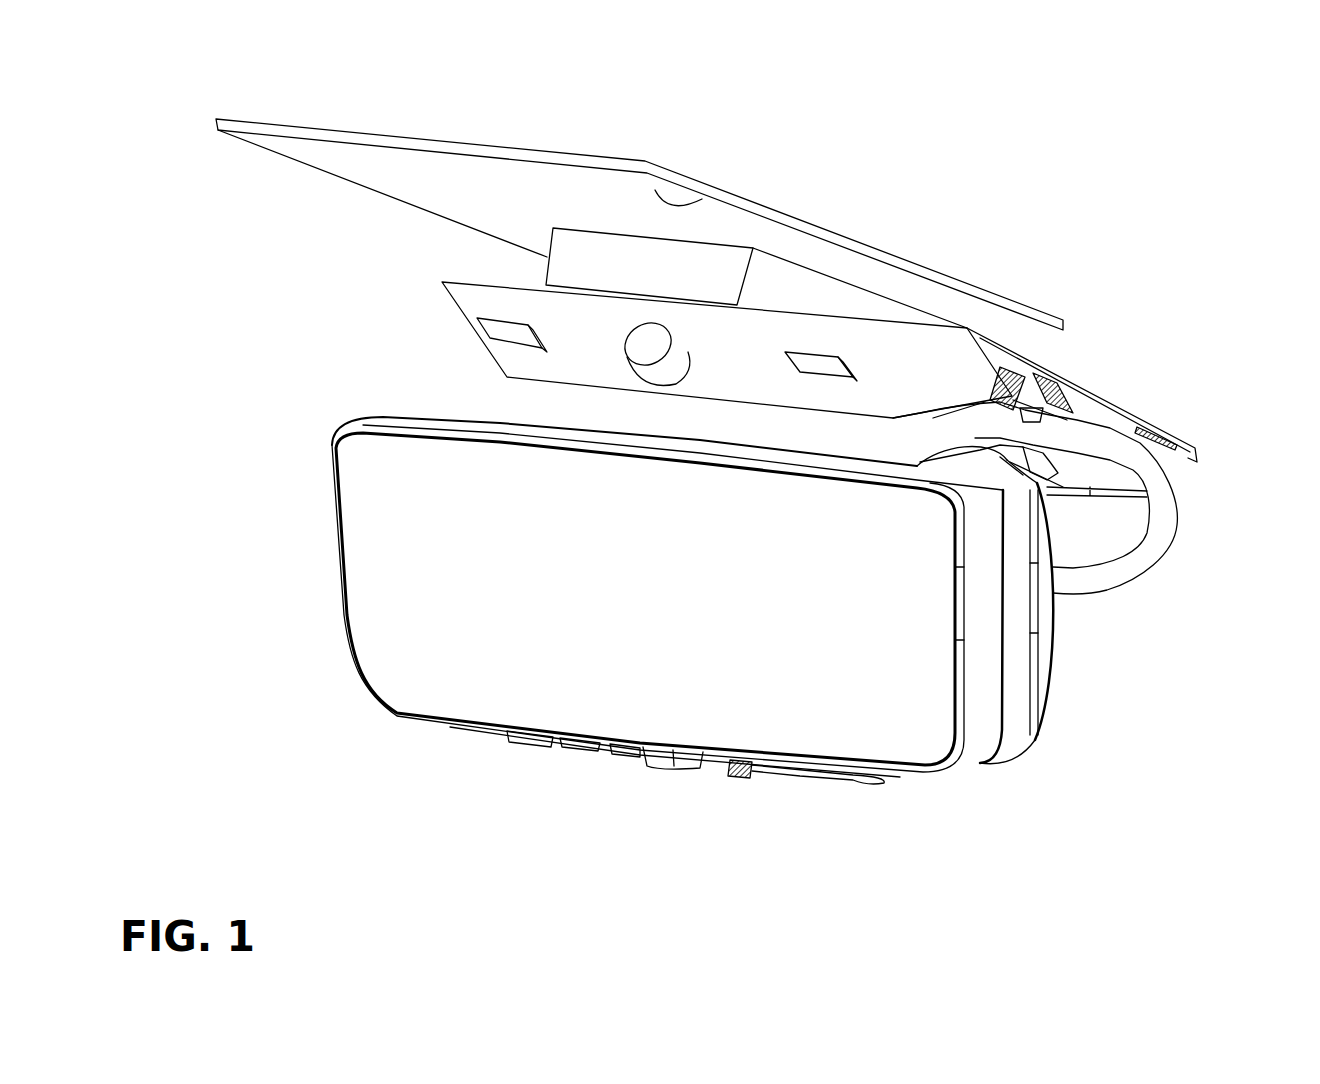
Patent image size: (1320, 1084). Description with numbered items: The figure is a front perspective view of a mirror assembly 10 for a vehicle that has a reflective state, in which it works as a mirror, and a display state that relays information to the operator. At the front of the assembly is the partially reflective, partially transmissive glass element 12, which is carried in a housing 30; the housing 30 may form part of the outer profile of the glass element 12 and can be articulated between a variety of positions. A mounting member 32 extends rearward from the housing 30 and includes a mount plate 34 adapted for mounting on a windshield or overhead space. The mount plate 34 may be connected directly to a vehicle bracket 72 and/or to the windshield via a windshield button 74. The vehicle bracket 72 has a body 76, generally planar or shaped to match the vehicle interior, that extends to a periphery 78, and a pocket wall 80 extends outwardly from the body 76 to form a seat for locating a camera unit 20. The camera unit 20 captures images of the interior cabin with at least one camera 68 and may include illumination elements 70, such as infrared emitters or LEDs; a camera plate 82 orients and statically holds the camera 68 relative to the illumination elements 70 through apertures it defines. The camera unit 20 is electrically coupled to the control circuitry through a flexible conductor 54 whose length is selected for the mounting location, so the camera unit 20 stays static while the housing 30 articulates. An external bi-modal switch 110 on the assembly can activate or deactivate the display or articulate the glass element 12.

The mirror assembly 10 is at (1118, 239).
The partially reflective, partially transmissive element 12 is at (470, 622).
The camera unit 20 is at (432, 312).
The housing 30 is at (1000, 662).
The mounting member 32 is at (1030, 470).
The mount plate 34 is at (1103, 423).
The flexible conductor 54 is at (1147, 537).
The camera 68 is at (652, 368).
The illumination element 70 is at (487, 335).
The vehicle bracket 72 is at (456, 142).
The windshield button 74 is at (1020, 350).
The body 76 is at (703, 203).
The periphery 78 is at (620, 155).
The pocket wall 80 is at (807, 287).
The camera plate 82 is at (913, 352).
The external bi-modal switch 110 is at (875, 782).